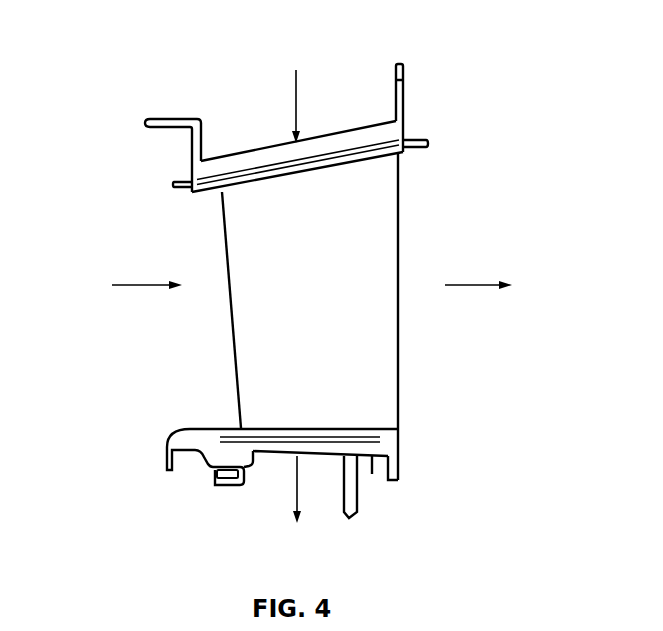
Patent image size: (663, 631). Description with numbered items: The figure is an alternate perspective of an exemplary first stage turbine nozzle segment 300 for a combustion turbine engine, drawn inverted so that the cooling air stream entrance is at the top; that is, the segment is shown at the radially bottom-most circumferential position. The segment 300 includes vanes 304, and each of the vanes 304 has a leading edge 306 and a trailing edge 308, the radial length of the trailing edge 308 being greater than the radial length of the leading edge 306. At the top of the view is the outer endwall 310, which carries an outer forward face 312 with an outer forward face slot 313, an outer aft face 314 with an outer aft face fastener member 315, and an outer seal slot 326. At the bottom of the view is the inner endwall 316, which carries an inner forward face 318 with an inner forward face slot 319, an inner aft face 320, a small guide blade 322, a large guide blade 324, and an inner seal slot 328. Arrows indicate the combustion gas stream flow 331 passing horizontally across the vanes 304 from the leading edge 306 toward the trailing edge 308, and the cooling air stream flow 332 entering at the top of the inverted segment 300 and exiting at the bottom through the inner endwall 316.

The first stage turbine nozzle segment 300 is at (158, 56).
The vanes 304 is at (335, 293).
The leading edge 306 is at (229, 300).
The trailing edge 308 is at (399, 337).
The outer endwall 310 is at (360, 129).
The outer forward face 312 is at (188, 133).
The outer forward face slot 313 is at (190, 162).
The outer aft face 314 is at (405, 140).
The outer aft face fastener member 315 is at (404, 73).
The inner endwall 316 is at (312, 457).
The inner forward face 318 is at (165, 452).
The inner forward face slot 319 is at (213, 472).
The inner aft face 320 is at (396, 452).
The small guide blade 322 is at (373, 466).
The large guide blade 324 is at (355, 517).
The outer seal slot 326 is at (290, 167).
The inner seal slot 328 is at (294, 438).
The combustion gas stream flow 331 is at (135, 284).
The cooling air stream flow 332 is at (296, 110).